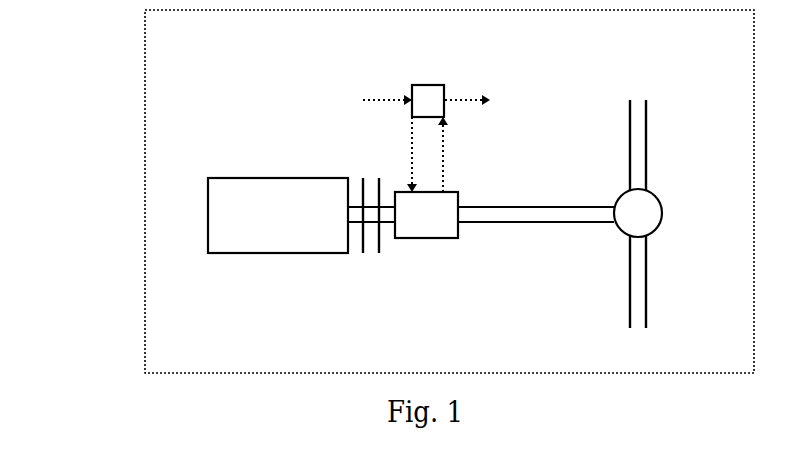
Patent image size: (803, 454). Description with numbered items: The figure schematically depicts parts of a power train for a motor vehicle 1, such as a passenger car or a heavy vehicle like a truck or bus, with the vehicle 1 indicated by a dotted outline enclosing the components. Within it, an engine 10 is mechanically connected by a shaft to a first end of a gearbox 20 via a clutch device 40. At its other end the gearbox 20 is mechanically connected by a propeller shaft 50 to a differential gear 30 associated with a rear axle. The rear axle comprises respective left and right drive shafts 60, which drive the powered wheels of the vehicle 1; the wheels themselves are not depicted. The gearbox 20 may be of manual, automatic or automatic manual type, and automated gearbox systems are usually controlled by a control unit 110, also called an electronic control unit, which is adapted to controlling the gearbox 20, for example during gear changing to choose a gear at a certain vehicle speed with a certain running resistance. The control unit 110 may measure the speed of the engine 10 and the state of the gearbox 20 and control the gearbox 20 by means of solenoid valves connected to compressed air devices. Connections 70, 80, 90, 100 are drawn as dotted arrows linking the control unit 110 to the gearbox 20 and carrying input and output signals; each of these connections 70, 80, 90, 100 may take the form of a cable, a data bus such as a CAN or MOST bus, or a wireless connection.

The motor vehicle 1 is at (162, 72).
The engine 10 is at (253, 223).
The gearbox 20 is at (427, 222).
The differential gear 30 is at (643, 205).
The clutch device 40 is at (370, 237).
The propeller shaft 50 is at (521, 224).
The drive shafts 60 is at (647, 145).
The connection 70 is at (410, 150).
The connection 80 is at (443, 150).
The connection 90 is at (380, 100).
The connection 100 is at (460, 100).
The control unit 110 is at (427, 85).